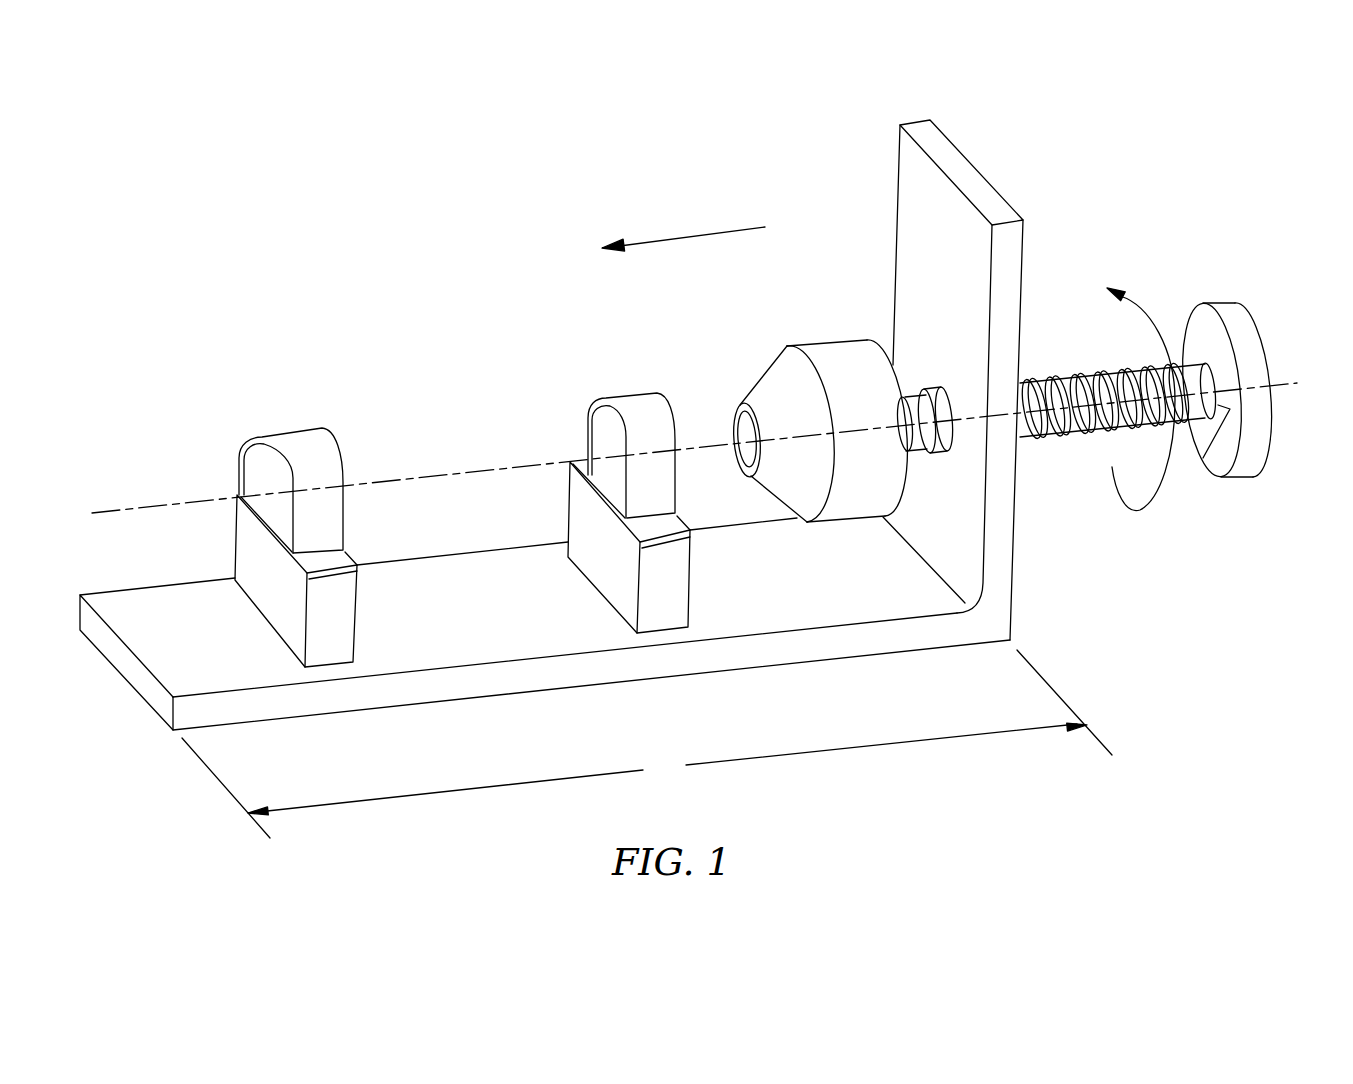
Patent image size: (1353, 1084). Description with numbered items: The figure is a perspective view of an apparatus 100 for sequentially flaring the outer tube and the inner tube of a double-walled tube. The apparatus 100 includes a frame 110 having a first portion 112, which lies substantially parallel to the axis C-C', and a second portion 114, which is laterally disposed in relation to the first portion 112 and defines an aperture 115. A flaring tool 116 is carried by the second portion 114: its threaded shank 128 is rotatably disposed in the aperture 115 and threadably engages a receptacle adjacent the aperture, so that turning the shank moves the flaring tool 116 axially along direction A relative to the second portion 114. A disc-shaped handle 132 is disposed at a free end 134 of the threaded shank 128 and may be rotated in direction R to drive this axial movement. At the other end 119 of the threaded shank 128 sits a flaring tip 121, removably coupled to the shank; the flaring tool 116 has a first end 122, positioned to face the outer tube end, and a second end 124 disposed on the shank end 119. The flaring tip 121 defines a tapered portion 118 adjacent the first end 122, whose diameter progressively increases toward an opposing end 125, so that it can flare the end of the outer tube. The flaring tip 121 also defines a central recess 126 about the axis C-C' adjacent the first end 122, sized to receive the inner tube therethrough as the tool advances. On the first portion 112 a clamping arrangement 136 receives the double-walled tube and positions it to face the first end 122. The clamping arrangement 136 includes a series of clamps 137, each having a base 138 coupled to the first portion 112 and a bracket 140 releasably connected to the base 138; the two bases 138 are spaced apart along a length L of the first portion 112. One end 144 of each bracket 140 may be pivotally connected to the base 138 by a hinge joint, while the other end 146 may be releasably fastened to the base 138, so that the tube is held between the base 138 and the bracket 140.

The apparatus 100 is at (252, 180).
The frame 110 is at (1025, 597).
The first portion 112 is at (740, 617).
The second portion 114 is at (963, 282).
The aperture 115 is at (938, 449).
The flaring tool 116 is at (1108, 497).
The tapered portion 118 is at (765, 388).
The end of threaded shank 119 is at (913, 390).
The flaring tip 121 is at (806, 315).
The first end 122 is at (733, 407).
The second end 124 is at (905, 480).
The opposing end of tapered portion 125 is at (828, 455).
The central recess 126 is at (742, 452).
The threaded shank 128 is at (1035, 397).
The handle 132 is at (1243, 358).
The free end 134 is at (1220, 415).
The clamping arrangement 136 is at (172, 431).
The clamp 137 is at (198, 405).
The base 138 is at (340, 622).
The bracket 140 is at (307, 453).
The one end of bracket 144 is at (332, 555).
The other end of bracket 146 is at (248, 490).